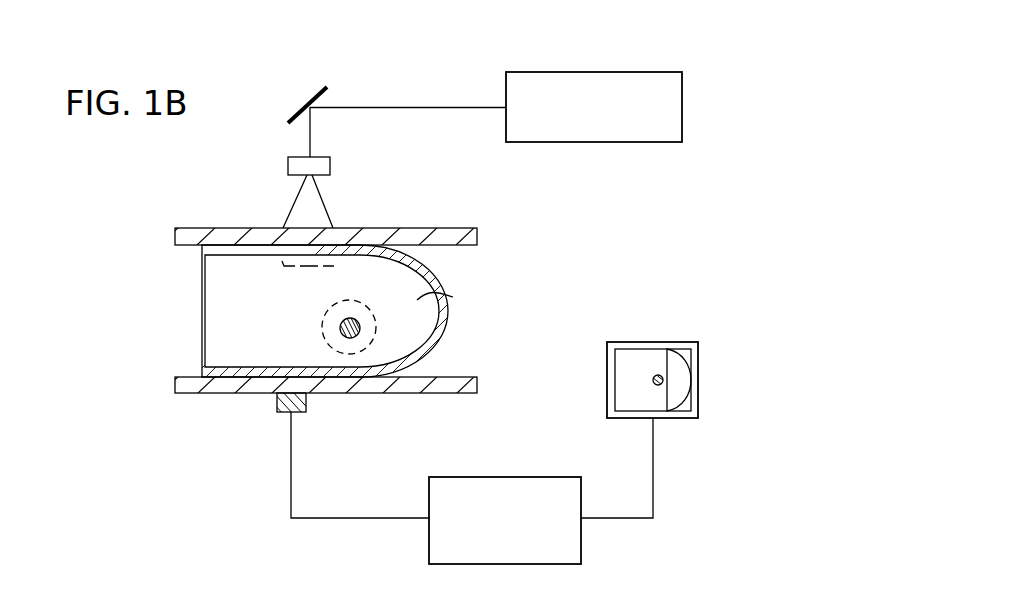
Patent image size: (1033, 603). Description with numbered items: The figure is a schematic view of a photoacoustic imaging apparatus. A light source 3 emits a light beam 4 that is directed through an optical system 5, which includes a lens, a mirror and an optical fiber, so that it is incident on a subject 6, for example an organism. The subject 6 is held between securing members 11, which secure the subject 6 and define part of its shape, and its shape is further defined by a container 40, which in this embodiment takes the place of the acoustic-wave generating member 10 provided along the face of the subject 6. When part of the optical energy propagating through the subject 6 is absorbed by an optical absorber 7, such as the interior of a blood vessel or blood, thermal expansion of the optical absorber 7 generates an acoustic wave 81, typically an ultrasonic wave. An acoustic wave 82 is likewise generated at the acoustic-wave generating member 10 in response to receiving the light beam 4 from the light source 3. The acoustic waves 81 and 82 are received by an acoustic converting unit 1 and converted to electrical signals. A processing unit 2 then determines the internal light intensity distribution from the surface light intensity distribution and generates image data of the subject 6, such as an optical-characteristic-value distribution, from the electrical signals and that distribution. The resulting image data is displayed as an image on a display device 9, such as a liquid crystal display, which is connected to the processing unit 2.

The acoustic converting unit 1 is at (285, 411).
The processing unit 2 is at (550, 477).
The light source 3 is at (623, 72).
The light beam 4 is at (400, 108).
The optical system 5 is at (320, 160).
The subject 6 is at (417, 303).
The optical absorber 7 is at (358, 319).
The display device 9 is at (610, 383).
The acoustic-wave generating member 10 is at (385, 301).
The container 40 is at (418, 265).
The securing members 11 is at (178, 240).
The acoustic wave 81 is at (351, 355).
The acoustic wave 82 is at (282, 262).